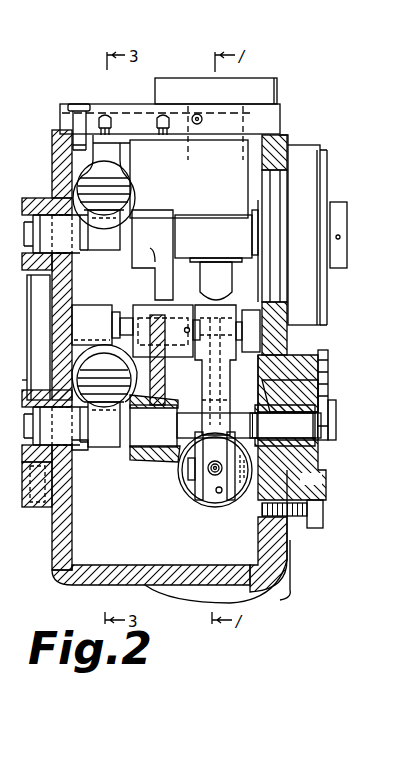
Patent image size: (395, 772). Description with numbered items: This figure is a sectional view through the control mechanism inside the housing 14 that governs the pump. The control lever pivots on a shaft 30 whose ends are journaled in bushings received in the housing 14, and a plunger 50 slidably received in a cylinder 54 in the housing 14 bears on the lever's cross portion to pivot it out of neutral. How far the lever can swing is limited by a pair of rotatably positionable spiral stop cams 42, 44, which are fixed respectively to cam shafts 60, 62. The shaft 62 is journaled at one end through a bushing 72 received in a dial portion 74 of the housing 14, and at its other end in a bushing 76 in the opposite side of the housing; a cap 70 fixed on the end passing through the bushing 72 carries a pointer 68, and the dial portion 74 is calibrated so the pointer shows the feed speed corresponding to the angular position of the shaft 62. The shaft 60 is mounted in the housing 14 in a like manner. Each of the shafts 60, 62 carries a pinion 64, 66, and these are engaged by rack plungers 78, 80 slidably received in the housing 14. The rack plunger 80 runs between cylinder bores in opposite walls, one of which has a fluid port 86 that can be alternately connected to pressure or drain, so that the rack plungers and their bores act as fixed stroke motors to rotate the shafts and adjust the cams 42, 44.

The housing 14 is at (283, 552).
The shaft 30 is at (126, 312).
The spiral stop cam 42 is at (156, 248).
The spiral stop cam 44 is at (170, 455).
The plunger 50 is at (224, 287).
The cylinder 54 is at (218, 189).
The cam shaft 60 is at (221, 247).
The cam shaft 62 is at (166, 436).
The pinion 64 is at (114, 247).
The pinion 66 is at (116, 436).
The pointer 68 is at (334, 380).
The cap 70 is at (337, 412).
The bushing 72 is at (288, 405).
The dial portion 74 is at (268, 363).
The bushing 76 is at (73, 447).
The rack plunger 78 is at (111, 197).
The rack plunger 80 is at (111, 389).
The fluid port 86 is at (13, 386).